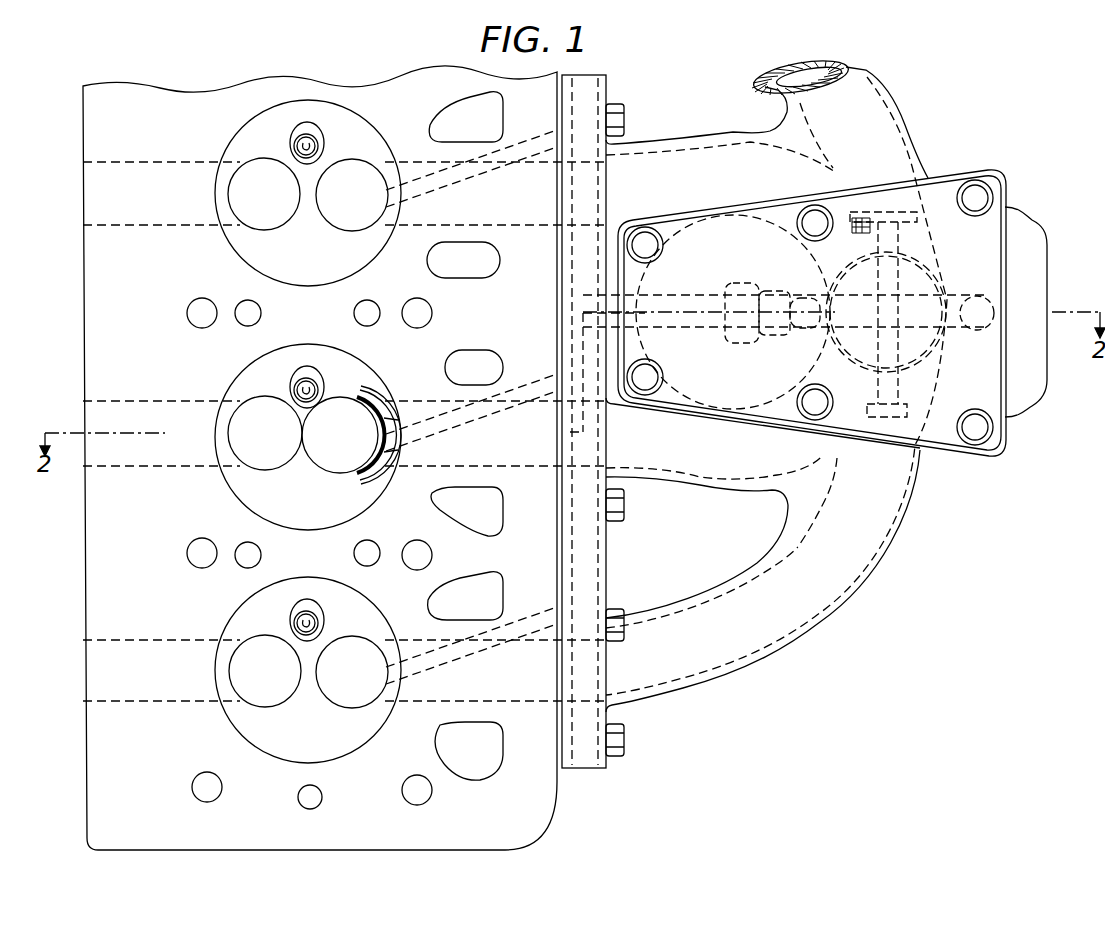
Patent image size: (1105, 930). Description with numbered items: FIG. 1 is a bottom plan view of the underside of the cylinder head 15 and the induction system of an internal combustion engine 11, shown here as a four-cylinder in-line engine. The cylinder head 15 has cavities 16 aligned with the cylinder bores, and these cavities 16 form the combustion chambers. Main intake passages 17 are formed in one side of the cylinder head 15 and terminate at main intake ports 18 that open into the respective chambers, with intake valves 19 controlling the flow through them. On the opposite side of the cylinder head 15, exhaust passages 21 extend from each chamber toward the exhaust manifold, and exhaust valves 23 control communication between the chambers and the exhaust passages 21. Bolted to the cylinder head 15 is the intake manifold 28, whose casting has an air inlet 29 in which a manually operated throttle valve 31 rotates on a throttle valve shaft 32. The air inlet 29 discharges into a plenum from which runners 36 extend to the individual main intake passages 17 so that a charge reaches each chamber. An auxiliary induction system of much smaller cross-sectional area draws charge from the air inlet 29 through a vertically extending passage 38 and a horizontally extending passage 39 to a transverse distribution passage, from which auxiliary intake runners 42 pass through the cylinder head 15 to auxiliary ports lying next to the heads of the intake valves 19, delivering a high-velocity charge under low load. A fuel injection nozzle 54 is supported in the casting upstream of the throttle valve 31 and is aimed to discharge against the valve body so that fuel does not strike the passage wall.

The internal combustion engine 11 is at (640, 69).
The cylinder head 15 is at (558, 796).
The cavities 16 is at (312, 270).
The main intake passages 17 is at (464, 226).
The main intake ports 18 is at (372, 472).
The intake valves 19 is at (361, 209).
The exhaust passages 21 is at (125, 224).
The exhaust valves 23 is at (272, 209).
The intake manifold 28 is at (897, 537).
The air inlet 29 is at (928, 257).
The manually operated throttle valve 31 is at (938, 285).
The throttle valve shaft 32 is at (912, 236).
The runners 36 is at (813, 123).
The vertically extending passage 38 is at (967, 331).
The horizontally extending passage 39 is at (648, 318).
The auxiliary intake runners 42 is at (480, 184).
The fuel injection nozzle 54 is at (740, 283).